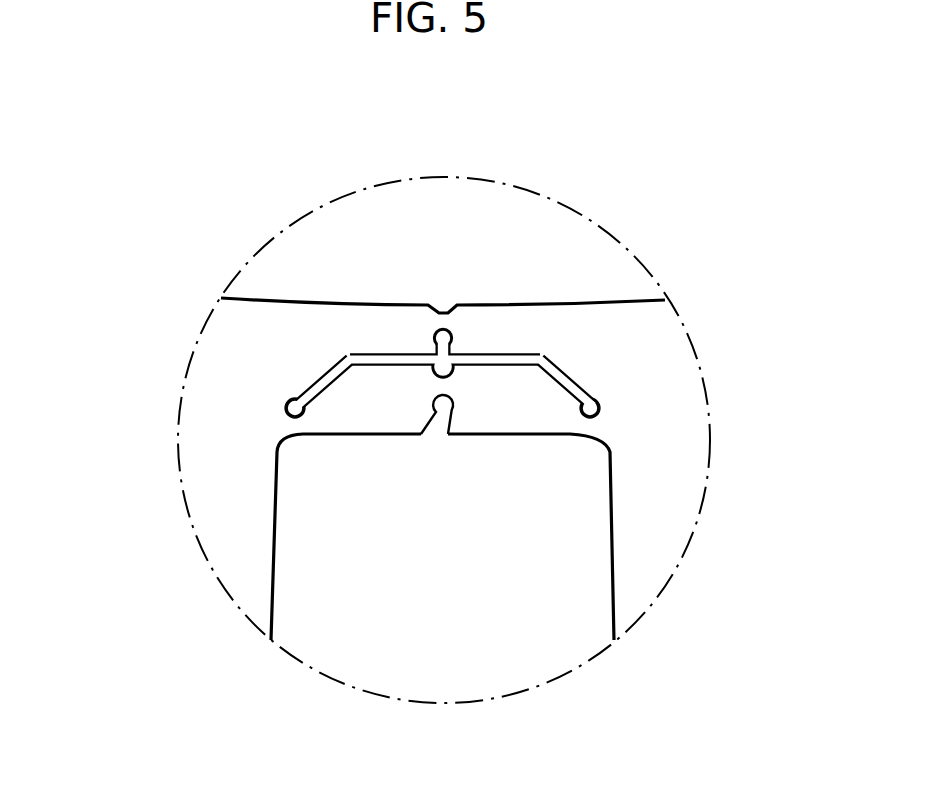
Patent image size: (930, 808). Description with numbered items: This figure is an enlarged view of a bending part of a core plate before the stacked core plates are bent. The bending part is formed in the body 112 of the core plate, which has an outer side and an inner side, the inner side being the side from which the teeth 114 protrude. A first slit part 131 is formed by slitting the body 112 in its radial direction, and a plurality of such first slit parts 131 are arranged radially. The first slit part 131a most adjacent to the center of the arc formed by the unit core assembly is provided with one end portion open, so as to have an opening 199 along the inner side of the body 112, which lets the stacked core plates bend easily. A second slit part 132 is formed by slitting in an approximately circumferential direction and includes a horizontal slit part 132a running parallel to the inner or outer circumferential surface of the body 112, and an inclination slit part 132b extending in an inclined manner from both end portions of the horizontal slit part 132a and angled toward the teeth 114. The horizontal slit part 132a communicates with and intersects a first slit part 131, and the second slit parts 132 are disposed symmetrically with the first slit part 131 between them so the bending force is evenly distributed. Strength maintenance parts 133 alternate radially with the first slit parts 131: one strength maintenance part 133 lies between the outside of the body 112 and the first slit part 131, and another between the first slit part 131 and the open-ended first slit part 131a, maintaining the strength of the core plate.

The body 112 is at (481, 322).
The teeth 114 is at (248, 562).
The first slit part 131 is at (441, 316).
The first slit part 131a is at (441, 417).
The second slit part 132 is at (441, 315).
The horizontal slit part 132a is at (392, 357).
The inclination slit part 132b is at (320, 386).
The strength maintenance part 133 is at (442, 328).
The opening 199 is at (446, 434).